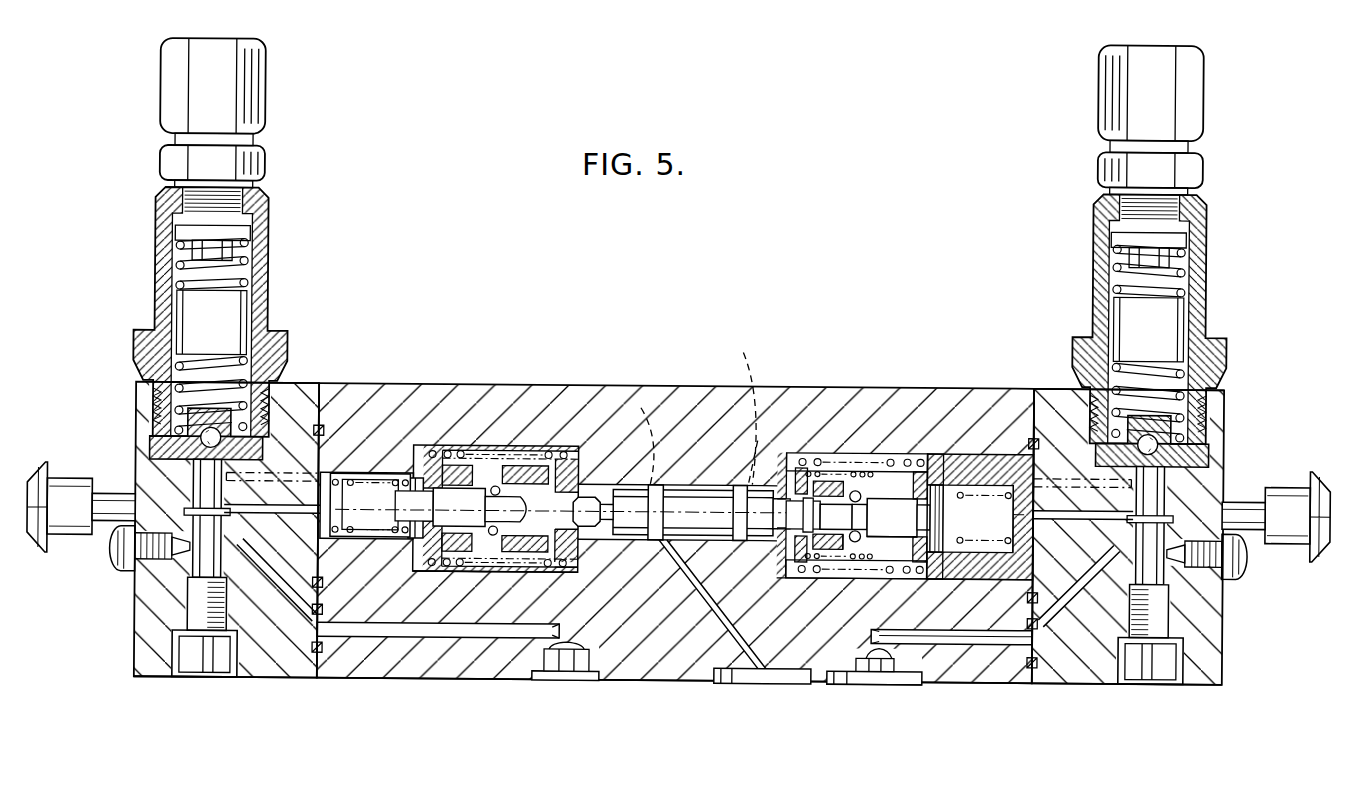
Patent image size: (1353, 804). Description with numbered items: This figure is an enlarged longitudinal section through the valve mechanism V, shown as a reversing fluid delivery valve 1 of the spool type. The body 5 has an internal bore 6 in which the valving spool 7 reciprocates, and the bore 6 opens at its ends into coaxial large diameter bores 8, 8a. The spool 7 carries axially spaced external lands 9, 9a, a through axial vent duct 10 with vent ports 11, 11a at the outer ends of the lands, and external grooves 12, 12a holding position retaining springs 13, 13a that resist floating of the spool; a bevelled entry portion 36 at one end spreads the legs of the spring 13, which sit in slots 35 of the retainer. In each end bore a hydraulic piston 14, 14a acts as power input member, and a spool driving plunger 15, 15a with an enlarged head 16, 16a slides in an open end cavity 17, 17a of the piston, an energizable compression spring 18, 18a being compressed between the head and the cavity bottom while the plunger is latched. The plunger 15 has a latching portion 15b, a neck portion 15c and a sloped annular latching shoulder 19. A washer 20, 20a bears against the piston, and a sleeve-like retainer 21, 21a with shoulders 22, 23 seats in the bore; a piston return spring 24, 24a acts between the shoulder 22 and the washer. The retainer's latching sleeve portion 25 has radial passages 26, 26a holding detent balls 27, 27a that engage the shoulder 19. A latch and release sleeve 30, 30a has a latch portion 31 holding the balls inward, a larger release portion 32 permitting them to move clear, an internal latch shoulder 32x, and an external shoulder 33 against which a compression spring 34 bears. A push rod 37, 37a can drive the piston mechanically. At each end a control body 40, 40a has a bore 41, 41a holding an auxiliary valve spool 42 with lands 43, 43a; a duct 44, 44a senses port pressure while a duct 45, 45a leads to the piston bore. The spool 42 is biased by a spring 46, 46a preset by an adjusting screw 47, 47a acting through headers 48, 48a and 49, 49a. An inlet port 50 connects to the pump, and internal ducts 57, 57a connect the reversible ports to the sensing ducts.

The fluid delivery valve 1 is at (693, 667).
The body 5 is at (657, 383).
The valve mechanism V is at (614, 383).
The internal bore 6 is at (612, 547).
The valving spool 7 is at (710, 489).
The large diameter bore 8 is at (880, 675).
The large diameter bore 8a is at (483, 451).
The external land 9 is at (740, 486).
The external land 9a is at (656, 486).
The axial vent duct 10 is at (714, 492).
The vent port 11 is at (745, 395).
The vent port 11a is at (645, 466).
The external groove 12 is at (773, 534).
The external groove 12a is at (600, 498).
The position retaining spring 13 is at (772, 569).
The position retaining spring 13a is at (580, 567).
The hydraulic piston 14 is at (1035, 388).
The hydraulic piston 14a is at (398, 473).
The spool driving plunger 15 is at (901, 526).
The spool driving plunger 15a is at (469, 519).
The latching portion 15b is at (1010, 470).
The neck portion 15c is at (880, 490).
The enlarged head 16 is at (980, 578).
The enlarged head 16a is at (395, 565).
The open end cavity 17 is at (1000, 565).
The open end cavity 17a is at (357, 473).
The energizable compression spring 18 is at (1038, 500).
The energizable compression spring 18a is at (370, 505).
The annular latching shoulder 19 is at (930, 452).
The washer 20 is at (945, 465).
The washer 20a is at (420, 478).
The retainer 21 is at (860, 668).
The retainer 21a is at (467, 565).
The annular shoulder 22 is at (782, 452).
The annular shoulder 23 is at (800, 478).
The piston return spring 24 is at (845, 565).
The piston return spring 24a is at (432, 565).
The latching sleeve portion 25 is at (838, 495).
The passages 26 is at (886, 569).
The passages 26a is at (512, 478).
The balls 27 is at (819, 515).
The balls 27a is at (498, 487).
The latch and release sleeve 30 is at (945, 470).
The latch and release sleeve 30a is at (490, 560).
The latch portion 31 is at (915, 468).
The release portion 32 is at (937, 576).
The internal latch shoulder 32x is at (984, 517).
The external shoulder 33 is at (853, 570).
The compression spring 34 is at (815, 478).
The slots 35 is at (770, 592).
The bevelled entry portion 36 is at (789, 582).
The push rod 37 is at (1248, 542).
The push rod 37a is at (110, 492).
The body 40 is at (1226, 640).
The body 40a is at (133, 630).
The bore 41 is at (1163, 576).
The bore 41a is at (198, 566).
The auxiliary valve spool 42 is at (1150, 497).
The lands 43 is at (1165, 516).
The lands 43a is at (228, 519).
The duct 44 is at (1062, 617).
The duct 44a is at (303, 616).
The duct 45 is at (1068, 524).
The duct 45a is at (300, 486).
The spring 46 is at (1187, 291).
The spring 46a is at (245, 265).
The adjusting screw 47 is at (1196, 122).
The adjusting screw 47a is at (262, 119).
The header 48 is at (1185, 244).
The header 48a is at (242, 238).
The header 49 is at (1185, 448).
The header 49a is at (160, 450).
The inlet port 50 is at (763, 675).
The internal duct 57 is at (910, 674).
The internal duct 57a is at (548, 674).